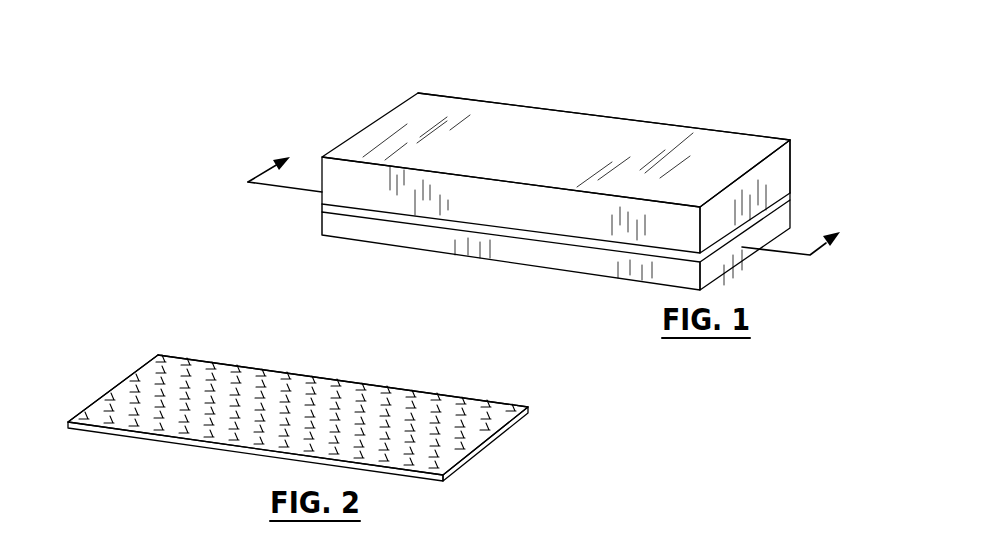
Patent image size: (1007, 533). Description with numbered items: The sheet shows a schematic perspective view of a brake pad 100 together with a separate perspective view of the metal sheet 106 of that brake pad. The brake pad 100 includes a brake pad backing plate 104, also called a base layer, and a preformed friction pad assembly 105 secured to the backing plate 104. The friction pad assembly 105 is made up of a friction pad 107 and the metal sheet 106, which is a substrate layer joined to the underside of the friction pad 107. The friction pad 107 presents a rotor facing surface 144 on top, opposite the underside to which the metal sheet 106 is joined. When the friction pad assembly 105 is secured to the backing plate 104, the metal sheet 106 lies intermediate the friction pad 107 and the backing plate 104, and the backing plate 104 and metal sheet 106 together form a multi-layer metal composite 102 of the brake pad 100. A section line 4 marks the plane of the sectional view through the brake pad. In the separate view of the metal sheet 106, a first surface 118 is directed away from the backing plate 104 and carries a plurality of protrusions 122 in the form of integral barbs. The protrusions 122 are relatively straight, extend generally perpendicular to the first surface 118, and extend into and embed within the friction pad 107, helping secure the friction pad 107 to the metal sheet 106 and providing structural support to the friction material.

In FIG. 1, the brake pad 100 is at (735, 41).
In FIG. 1, the friction pad assembly 105 is at (360, 106).
In FIG. 1, the rotor facing surface 144 is at (737, 147).
In FIG. 1, the friction pad 107 is at (782, 157).
In FIG. 1, the metal sheet 106 is at (786, 196).
In FIG. 2, the metal sheet 106 is at (514, 386).
In FIG. 1, the brake pad backing plate 104 is at (788, 216).
In FIG. 1, the multi-layer metal composite 102 is at (321, 205).
In FIG. 1, the section line 4- 4 is at (552, 193).
In FIG. 2, the metal sheet first surface 118 is at (183, 370).
In FIG. 2, the protrusions 122 is at (118, 397).